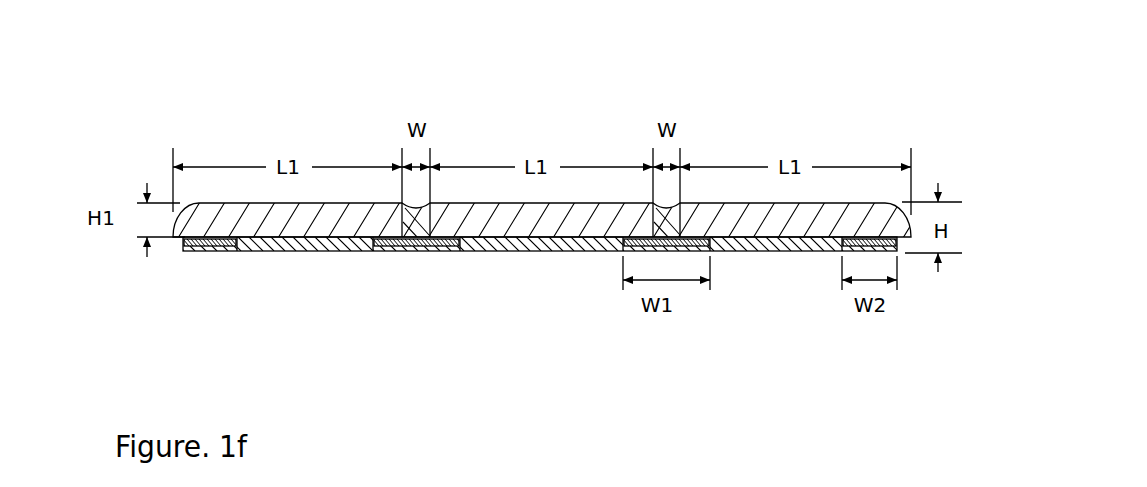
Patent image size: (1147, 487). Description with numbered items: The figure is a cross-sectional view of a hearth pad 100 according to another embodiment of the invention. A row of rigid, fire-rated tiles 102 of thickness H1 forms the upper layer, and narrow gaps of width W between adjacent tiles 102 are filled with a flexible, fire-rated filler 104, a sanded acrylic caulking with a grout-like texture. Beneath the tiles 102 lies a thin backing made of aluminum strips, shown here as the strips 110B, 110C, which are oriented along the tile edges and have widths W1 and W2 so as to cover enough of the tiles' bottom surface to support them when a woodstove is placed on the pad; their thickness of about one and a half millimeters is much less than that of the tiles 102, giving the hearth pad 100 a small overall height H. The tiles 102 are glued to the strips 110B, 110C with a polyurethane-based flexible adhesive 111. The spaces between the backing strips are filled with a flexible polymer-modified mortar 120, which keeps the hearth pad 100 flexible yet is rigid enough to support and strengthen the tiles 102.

The hearth pad 100 is at (768, 115).
The tiles 102 is at (211, 218).
The filler 104 is at (403, 238).
The aluminum strip 110B is at (622, 252).
The aluminum strip 110C is at (220, 251).
The flexible adhesive 111 is at (373, 251).
The flexible mortar 120 is at (300, 251).